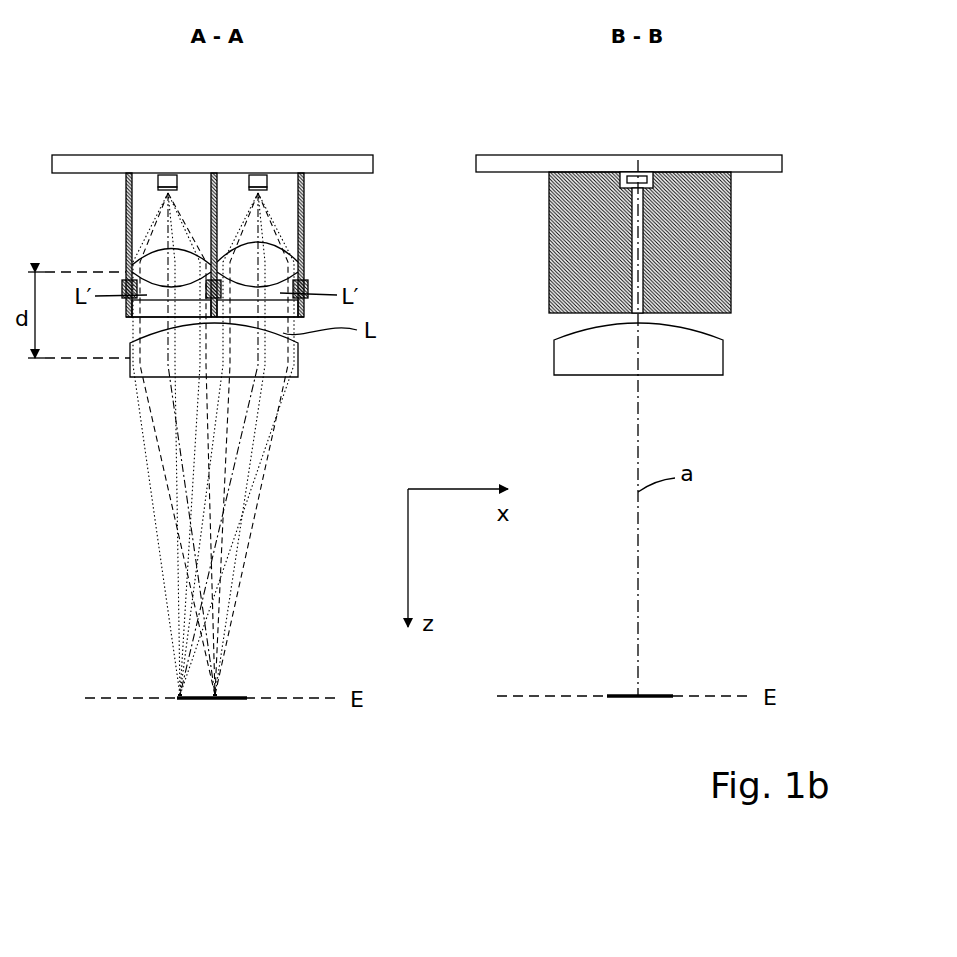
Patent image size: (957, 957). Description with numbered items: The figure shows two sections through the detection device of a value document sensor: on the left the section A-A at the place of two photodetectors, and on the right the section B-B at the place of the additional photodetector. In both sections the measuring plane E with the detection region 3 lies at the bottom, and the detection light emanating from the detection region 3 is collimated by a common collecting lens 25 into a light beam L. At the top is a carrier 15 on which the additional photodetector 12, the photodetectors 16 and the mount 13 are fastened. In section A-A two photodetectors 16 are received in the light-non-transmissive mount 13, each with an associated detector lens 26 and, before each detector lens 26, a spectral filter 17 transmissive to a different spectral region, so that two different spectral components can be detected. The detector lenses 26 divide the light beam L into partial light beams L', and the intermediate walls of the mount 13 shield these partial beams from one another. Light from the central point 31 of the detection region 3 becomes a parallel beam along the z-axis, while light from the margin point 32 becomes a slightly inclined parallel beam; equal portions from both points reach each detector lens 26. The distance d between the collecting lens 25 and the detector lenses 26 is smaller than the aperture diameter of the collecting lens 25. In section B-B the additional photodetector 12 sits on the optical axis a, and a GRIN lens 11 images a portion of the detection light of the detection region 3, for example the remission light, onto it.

The carrier 15 is at (68, 155).
The photodetector 16 is at (170, 180).
The mount 13 is at (126, 208).
The detector lens 26 is at (190, 262).
The spectral filter 17 is at (240, 310).
The collecting lens 25 is at (298, 357).
The detection region 3 is at (425, 718).
The margin point 32 is at (178, 699).
The central point 31 is at (218, 699).
The additional photodetector 12 is at (629, 172).
The GRIN lens 11 is at (642, 198).